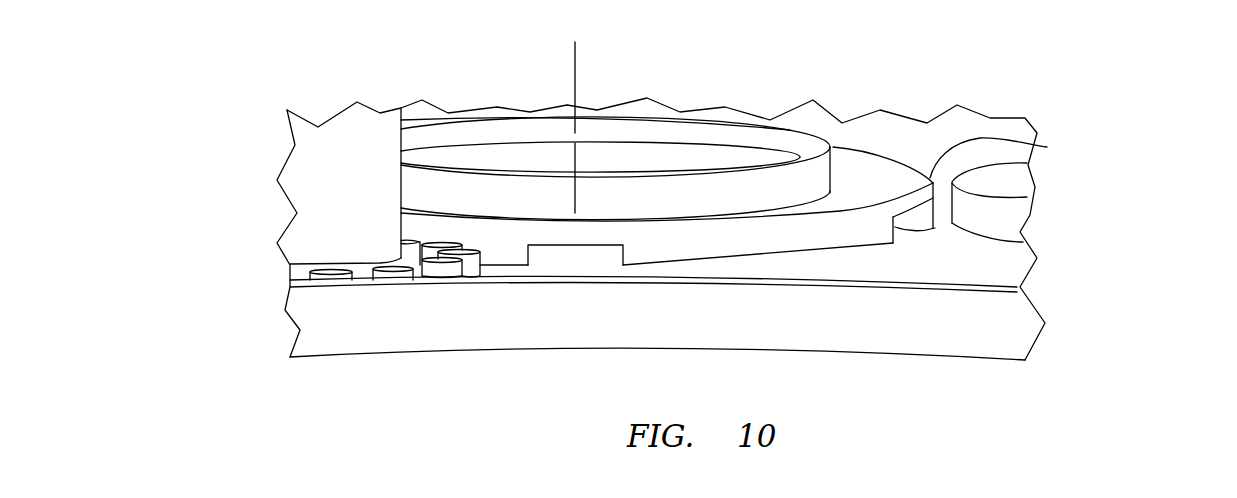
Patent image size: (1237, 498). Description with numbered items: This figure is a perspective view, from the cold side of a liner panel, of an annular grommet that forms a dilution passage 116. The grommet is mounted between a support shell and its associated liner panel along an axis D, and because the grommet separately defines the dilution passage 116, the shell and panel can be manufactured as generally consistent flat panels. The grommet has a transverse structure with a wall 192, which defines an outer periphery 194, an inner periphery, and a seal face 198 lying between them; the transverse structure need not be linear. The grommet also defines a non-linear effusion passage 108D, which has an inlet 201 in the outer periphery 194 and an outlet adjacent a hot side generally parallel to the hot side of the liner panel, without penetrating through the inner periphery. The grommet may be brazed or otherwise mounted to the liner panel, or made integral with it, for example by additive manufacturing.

The axis D is at (573, 75).
The dilution passage 116 is at (589, 160).
The wall 192 is at (848, 152).
The outer periphery 194 is at (862, 218).
The seal face 198 is at (1037, 148).
The inlet 201 is at (917, 220).
The effusion passage 108D is at (600, 258).